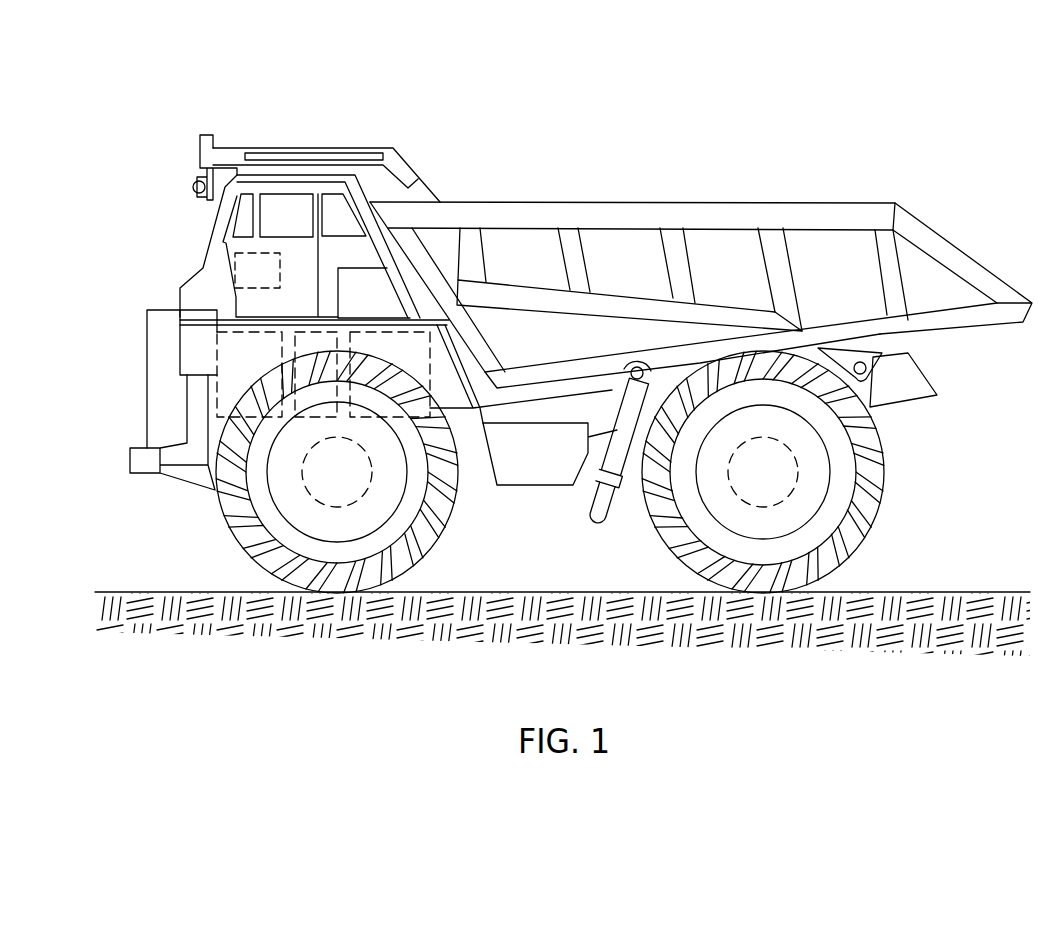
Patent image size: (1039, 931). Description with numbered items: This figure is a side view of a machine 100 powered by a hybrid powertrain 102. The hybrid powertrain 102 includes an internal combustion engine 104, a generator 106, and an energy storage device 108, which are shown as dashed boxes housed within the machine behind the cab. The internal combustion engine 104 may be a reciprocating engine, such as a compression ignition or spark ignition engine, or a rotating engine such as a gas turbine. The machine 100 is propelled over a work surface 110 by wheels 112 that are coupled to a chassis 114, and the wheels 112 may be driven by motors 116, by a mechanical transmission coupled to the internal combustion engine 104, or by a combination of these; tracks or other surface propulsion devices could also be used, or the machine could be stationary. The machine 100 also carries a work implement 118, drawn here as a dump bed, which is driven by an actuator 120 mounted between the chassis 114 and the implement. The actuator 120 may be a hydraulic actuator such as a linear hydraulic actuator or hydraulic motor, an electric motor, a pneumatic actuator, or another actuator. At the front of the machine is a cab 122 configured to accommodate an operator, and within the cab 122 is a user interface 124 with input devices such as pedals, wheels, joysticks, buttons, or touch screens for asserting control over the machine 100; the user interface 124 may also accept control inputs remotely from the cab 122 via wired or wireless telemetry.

The machine 100 is at (810, 76).
The hybrid powertrain 102 is at (290, 652).
The internal combustion engine 104 is at (497, 430).
The generator 106 is at (327, 333).
The energy storage device 108 is at (217, 342).
The work surface 110 is at (962, 590).
The wheels 112 is at (415, 543).
The chassis 114 is at (470, 440).
The motors 116 is at (307, 487).
The work implement 118 is at (833, 202).
The actuator 120 is at (645, 462).
The cab 122 is at (250, 217).
The user interface 124 is at (233, 266).